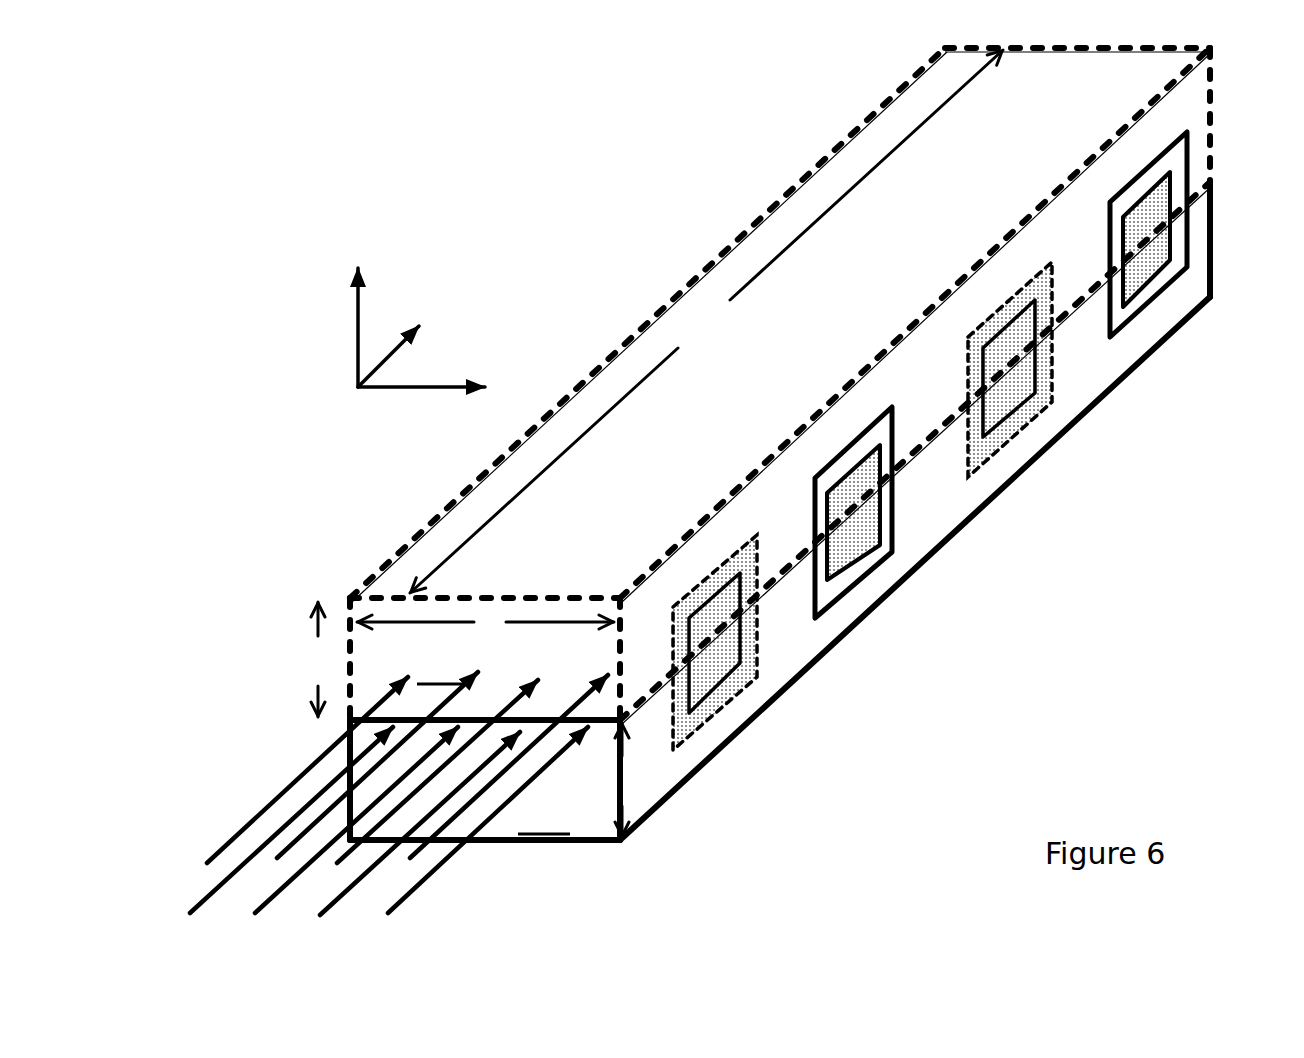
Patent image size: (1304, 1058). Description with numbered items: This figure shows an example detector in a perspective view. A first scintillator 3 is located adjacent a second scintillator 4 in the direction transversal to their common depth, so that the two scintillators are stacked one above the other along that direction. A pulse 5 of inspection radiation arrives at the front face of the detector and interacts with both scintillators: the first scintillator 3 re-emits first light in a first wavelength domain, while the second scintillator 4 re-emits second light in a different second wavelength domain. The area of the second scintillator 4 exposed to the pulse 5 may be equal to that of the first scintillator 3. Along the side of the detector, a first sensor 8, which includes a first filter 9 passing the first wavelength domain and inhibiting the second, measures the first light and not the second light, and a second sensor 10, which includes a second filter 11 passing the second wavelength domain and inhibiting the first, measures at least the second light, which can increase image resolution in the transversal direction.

The first scintillator 3 is at (852, 138).
The second scintillator 4 is at (660, 810).
The pulse of inspection radiation 5 is at (470, 864).
The first sensor 8 is at (710, 655).
The first filter 9 is at (677, 723).
The second sensor 10 is at (853, 522).
The second filter 11 is at (833, 588).